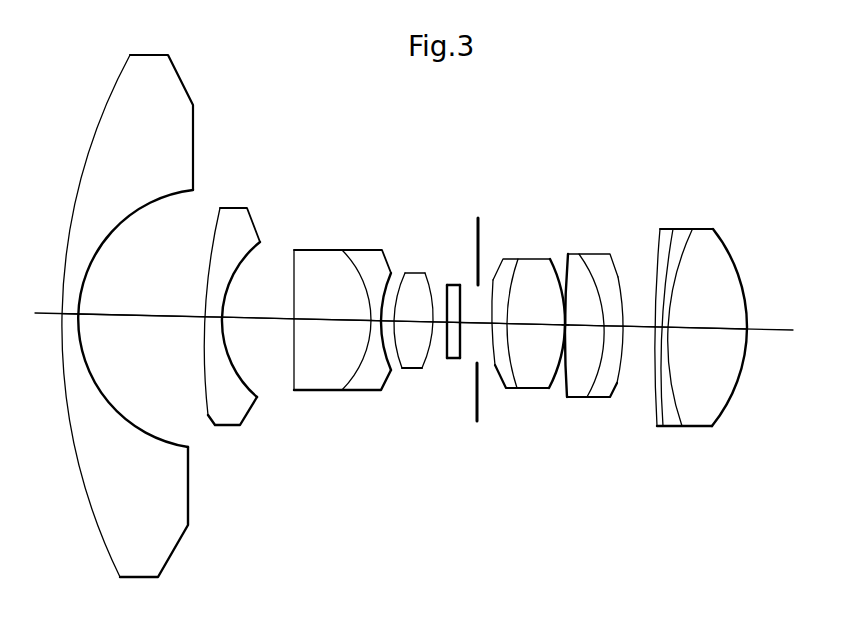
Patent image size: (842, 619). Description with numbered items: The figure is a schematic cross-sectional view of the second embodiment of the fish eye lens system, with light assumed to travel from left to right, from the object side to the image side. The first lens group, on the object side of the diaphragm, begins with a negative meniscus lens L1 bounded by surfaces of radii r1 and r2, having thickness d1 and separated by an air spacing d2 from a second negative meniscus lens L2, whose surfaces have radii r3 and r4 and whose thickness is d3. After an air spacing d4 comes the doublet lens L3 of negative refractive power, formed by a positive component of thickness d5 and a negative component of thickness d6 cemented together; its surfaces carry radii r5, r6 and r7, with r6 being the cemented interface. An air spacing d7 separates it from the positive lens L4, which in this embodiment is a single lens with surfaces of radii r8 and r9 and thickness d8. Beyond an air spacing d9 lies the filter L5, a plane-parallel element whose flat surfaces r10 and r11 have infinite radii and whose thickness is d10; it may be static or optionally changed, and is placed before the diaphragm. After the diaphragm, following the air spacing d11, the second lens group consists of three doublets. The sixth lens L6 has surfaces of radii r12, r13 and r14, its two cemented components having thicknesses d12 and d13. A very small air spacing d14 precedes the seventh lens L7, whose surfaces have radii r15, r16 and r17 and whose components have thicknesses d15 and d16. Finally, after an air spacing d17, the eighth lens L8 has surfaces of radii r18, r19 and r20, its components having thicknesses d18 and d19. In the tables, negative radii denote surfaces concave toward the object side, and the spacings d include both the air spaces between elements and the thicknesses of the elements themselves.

The negative meniscus lens L1 is at (195, 43).
The second negative meniscus lens L2 is at (262, 120).
The doublet lens L3 is at (393, 136).
The positive lens L4 is at (434, 154).
The filter L5 is at (463, 155).
The sixth lens L6 is at (565, 142).
The seventh lens L7 is at (624, 159).
The eighth lens L8 is at (748, 148).
The radius of curvature of first surface r1 is at (100, 548).
The radius of curvature of second surface r2 is at (152, 433).
The radius of curvature of third surface r3 is at (210, 415).
The radius of curvature of fourth surface r4 is at (246, 384).
The radius of curvature of fifth surface r5 is at (293, 388).
The radius of curvature of sixth surface r6 is at (341, 389).
The radius of curvature of seventh surface r7 is at (387, 360).
The radius of curvature of eighth surface r8 is at (400, 370).
The radius of curvature of ninth surface r9 is at (422, 369).
The radius of curvature of tenth surface r10 is at (447, 357).
The radius of curvature of eleventh surface r11 is at (460, 360).
The radius of curvature of twelfth surface r12 is at (494, 365).
The radius of curvature of thirteenth surface r13 is at (516, 389).
The radius of curvature of fourteenth surface r14 is at (552, 383).
The radius of curvature of fifteenth surface r15 is at (567, 398).
The radius of curvature of sixteenth surface r16 is at (588, 397).
The radius of curvature of seventeenth surface r17 is at (619, 378).
The radius of curvature of eighteenth surface r18 is at (657, 412).
The radius of curvature of nineteenth surface r19 is at (683, 427).
The radius of curvature of twentieth surface r20 is at (727, 408).
The axial thickness of first lens d1 is at (62, 296).
The axial air spacing d2 is at (138, 316).
The axial thickness of second lens d3 is at (203, 305).
The axial air spacing d4 is at (255, 313).
The axial thickness of first component of third lens d5 is at (332, 321).
The axial thickness of second component of third lens d6 is at (371, 318).
The axial air spacing d7 is at (394, 287).
The axial thickness of fourth lens d8 is at (417, 322).
The axial air spacing d9 is at (437, 300).
The axial thickness of filter d10 is at (452, 288).
The axial air spacing d11 is at (477, 323).
The axial thickness of first component of sixth lens d12 is at (500, 288).
The axial thickness of second component of sixth lens d13 is at (532, 323).
The axial air spacing d14 is at (564, 295).
The axial thickness of first component of seventh lens d15 is at (592, 325).
The axial thickness of second component of seventh lens d16 is at (620, 290).
The axial air spacing d17 is at (643, 325).
The axial thickness of first component of eighth lens d18 is at (673, 230).
The axial thickness of second component of eighth lens d19 is at (687, 327).